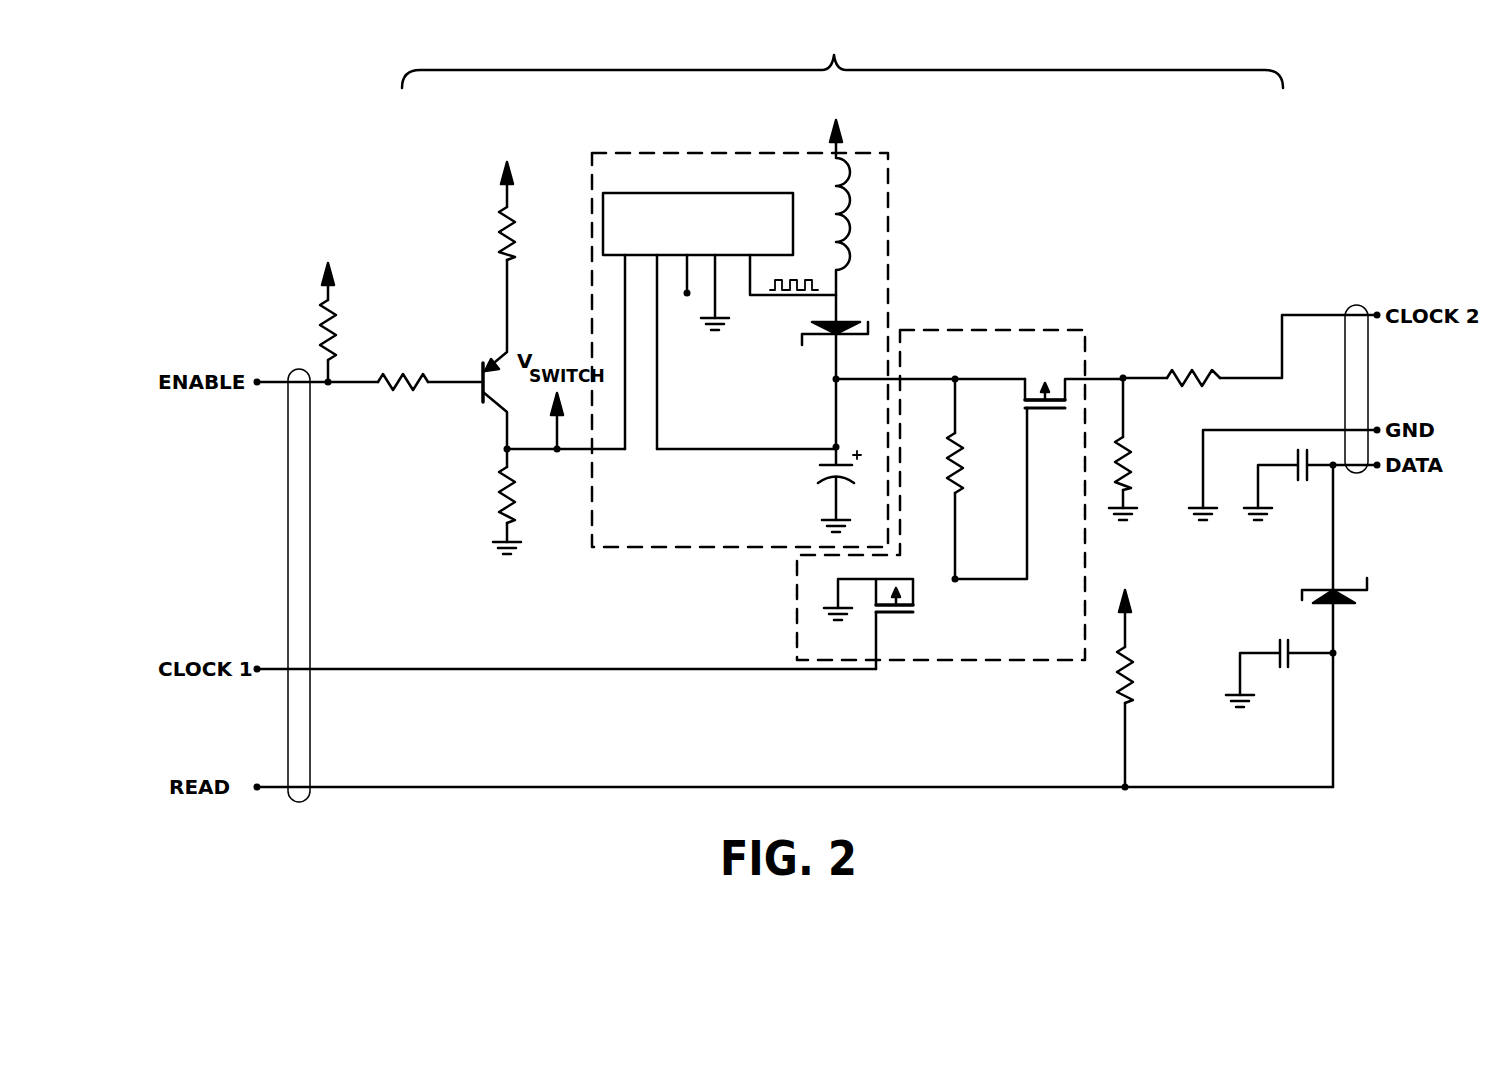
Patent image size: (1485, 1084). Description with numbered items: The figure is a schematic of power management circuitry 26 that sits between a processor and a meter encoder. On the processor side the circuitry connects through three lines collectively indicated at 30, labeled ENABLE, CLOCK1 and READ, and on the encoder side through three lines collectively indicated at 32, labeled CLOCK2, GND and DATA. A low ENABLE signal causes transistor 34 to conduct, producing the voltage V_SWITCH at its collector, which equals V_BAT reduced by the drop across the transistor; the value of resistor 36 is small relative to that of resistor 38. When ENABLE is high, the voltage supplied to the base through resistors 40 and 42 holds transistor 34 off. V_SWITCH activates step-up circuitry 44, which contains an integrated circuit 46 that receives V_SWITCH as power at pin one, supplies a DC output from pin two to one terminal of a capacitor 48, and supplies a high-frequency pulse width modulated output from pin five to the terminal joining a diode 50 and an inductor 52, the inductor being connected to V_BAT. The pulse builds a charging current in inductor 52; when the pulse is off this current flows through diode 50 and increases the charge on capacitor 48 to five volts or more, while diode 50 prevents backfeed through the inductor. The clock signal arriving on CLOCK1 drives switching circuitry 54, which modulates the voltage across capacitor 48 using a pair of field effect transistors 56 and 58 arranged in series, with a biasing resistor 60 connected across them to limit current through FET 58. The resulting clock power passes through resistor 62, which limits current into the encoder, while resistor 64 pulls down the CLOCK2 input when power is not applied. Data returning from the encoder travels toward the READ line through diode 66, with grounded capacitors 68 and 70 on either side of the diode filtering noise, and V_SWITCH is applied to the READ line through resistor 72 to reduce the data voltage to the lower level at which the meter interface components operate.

The power management circuitry 26 is at (842, 57).
The three lines to processor 30 is at (300, 802).
The three lines to meter encoder 32 is at (1362, 473).
The transistor 34 is at (484, 396).
The resistor 36 is at (514, 220).
The resistor 38 is at (500, 489).
The resistor 40 is at (336, 325).
The resistor 42 is at (408, 372).
The step-up circuitry 44 is at (888, 228).
The integrated circuit 46 is at (672, 193).
The capacitor 48 is at (820, 466).
The diode 50 is at (812, 322).
The inductor 52 is at (826, 194).
The switching circuitry 54 is at (990, 330).
The field effect transistor 56 is at (914, 594).
The field effect transistor 58 is at (1021, 395).
The biasing resistor 60 is at (961, 470).
The resistor 62 is at (1194, 372).
The resistor 64 is at (1130, 458).
The diode 66 is at (1340, 606).
The capacitor 68 is at (1310, 480).
The capacitor 70 is at (1290, 667).
The resistor 72 is at (1132, 665).